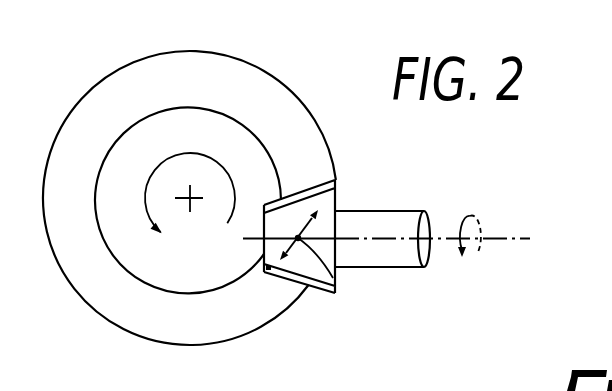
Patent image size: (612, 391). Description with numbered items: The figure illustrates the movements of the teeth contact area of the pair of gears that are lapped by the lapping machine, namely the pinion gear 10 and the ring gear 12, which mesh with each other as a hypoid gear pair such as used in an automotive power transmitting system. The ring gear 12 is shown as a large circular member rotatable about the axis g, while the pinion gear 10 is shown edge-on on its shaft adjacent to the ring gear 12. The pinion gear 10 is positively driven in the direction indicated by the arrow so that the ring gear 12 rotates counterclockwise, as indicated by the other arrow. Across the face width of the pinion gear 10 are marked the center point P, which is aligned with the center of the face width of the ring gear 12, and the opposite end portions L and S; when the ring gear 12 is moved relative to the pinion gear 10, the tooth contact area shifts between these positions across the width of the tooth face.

The pinion gear 10 is at (308, 182).
The ring gear 12 is at (220, 57).
The end portion of face width of pinion gear L is at (319, 209).
The center point of face width P is at (513, 238).
The end portion of face width of pinion gear S is at (268, 271).
The axis of rotation of ring gear g is at (192, 199).